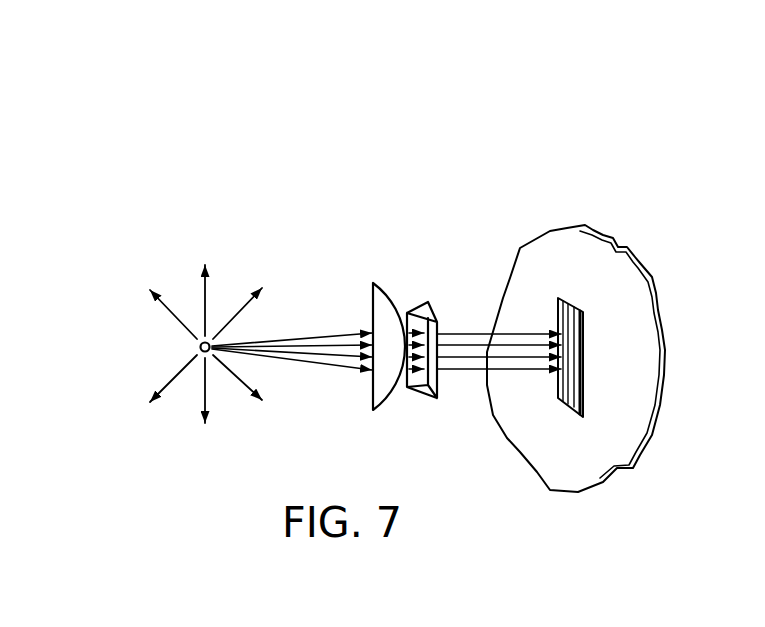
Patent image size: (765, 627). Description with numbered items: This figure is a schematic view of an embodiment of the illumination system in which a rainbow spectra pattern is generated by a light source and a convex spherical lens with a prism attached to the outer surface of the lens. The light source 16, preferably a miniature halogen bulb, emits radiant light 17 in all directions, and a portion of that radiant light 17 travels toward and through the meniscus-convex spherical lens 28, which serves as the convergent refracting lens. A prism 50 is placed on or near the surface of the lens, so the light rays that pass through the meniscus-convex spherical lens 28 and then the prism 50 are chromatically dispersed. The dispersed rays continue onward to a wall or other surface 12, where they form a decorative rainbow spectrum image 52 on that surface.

The wall or other surface 12 is at (638, 365).
The light source 16 is at (192, 346).
The radiant light 17 is at (287, 333).
The meniscus-convex spherical lens 28 is at (365, 313).
The prism 50 is at (437, 318).
The rainbow spectrum image 52 is at (562, 300).